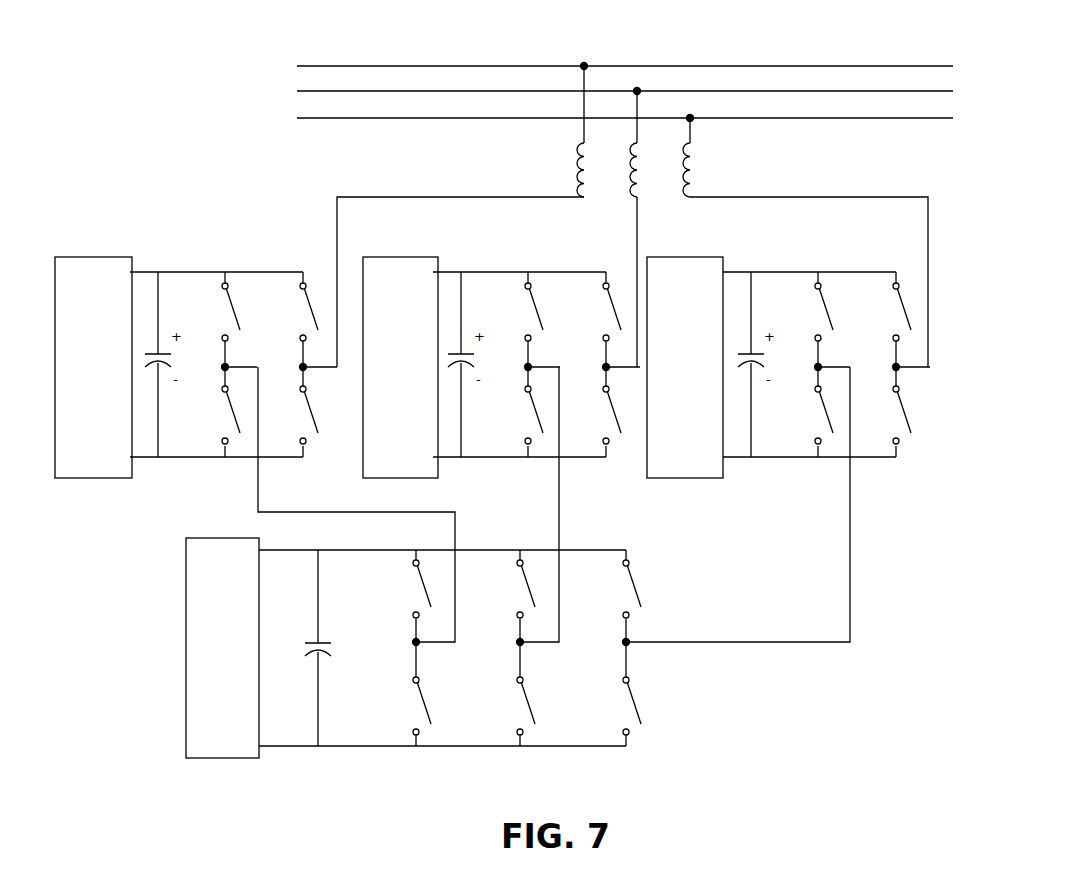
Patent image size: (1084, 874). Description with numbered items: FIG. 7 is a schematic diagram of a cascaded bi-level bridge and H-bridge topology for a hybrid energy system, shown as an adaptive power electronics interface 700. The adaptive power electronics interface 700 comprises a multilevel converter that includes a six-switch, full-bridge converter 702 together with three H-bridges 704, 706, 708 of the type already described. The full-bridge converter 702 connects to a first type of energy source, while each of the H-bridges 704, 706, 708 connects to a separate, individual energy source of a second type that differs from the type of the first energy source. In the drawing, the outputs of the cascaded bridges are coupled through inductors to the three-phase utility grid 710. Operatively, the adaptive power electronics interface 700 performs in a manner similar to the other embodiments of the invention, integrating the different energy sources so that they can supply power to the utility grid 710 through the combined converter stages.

The adaptive power electronics interface 700 is at (935, 38).
The six-switch full-bridge converter 702 is at (634, 754).
The H-bridge 704 is at (228, 253).
The H-bridge 706 is at (508, 253).
The H-bridge 708 is at (814, 253).
The utility grid 710 is at (838, 134).